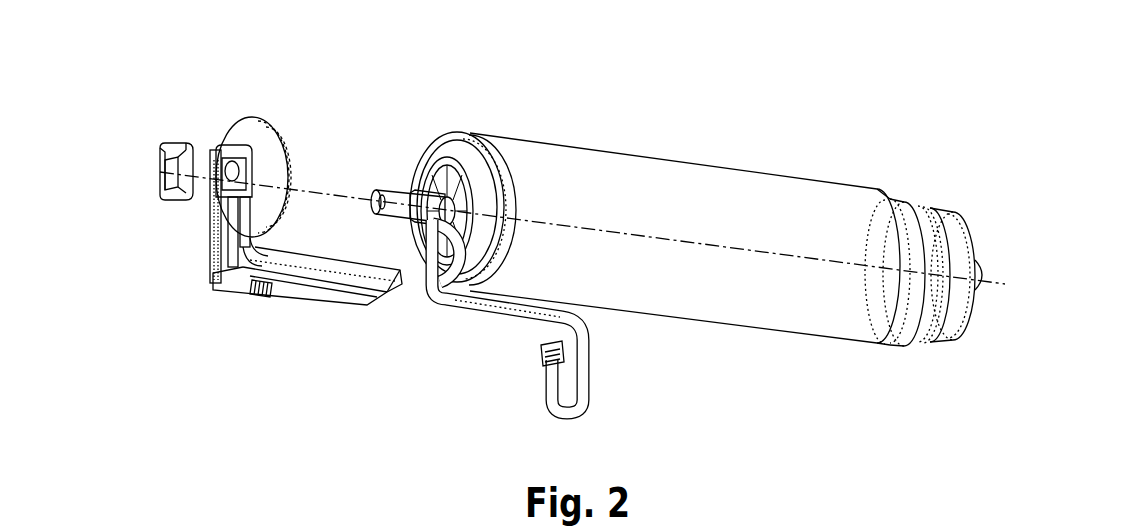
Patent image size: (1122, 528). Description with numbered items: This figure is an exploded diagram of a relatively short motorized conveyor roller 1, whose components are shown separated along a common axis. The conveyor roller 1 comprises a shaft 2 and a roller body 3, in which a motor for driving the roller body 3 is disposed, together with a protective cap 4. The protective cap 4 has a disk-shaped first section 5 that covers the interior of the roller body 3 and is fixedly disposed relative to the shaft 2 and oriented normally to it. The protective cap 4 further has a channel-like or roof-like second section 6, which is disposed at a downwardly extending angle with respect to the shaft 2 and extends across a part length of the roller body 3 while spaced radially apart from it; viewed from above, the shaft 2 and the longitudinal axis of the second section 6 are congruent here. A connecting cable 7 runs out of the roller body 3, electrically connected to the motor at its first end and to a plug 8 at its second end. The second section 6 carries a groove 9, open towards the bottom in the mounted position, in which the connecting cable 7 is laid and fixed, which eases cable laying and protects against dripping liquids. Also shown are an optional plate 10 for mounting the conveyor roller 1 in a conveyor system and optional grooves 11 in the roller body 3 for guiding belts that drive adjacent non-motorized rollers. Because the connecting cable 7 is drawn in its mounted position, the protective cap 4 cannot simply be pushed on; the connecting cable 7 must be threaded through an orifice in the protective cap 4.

The conveyor roller 1 is at (930, 83).
The shaft 2 is at (393, 192).
The roller body 3 is at (740, 185).
The protective cap 4 is at (213, 260).
The disk-shaped first section 5 is at (220, 114).
The second section 6 is at (328, 318).
The connecting cable 7 is at (585, 389).
The plug 8 is at (543, 352).
The groove 9 is at (262, 287).
The plate 10 is at (165, 157).
The grooves 11 is at (912, 354).